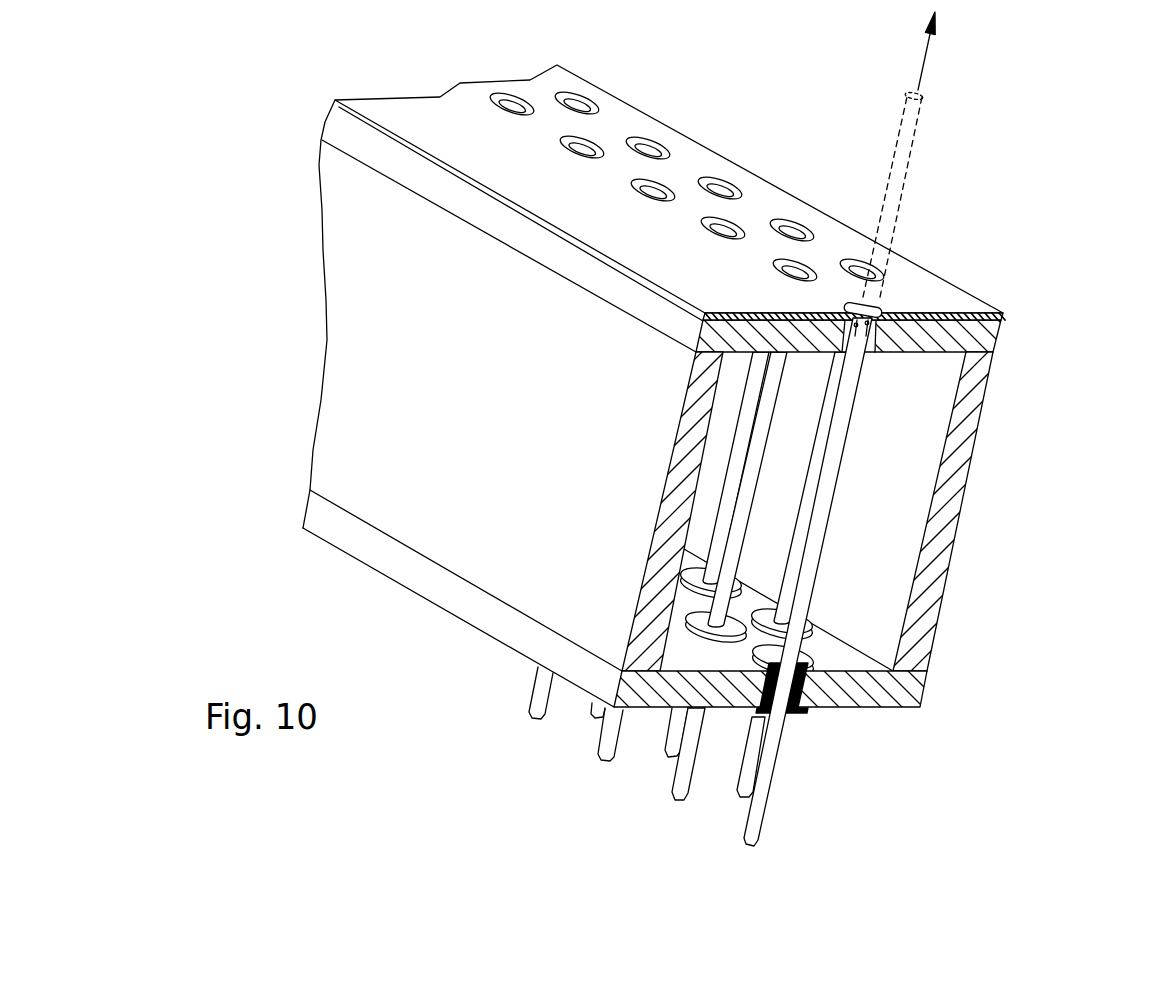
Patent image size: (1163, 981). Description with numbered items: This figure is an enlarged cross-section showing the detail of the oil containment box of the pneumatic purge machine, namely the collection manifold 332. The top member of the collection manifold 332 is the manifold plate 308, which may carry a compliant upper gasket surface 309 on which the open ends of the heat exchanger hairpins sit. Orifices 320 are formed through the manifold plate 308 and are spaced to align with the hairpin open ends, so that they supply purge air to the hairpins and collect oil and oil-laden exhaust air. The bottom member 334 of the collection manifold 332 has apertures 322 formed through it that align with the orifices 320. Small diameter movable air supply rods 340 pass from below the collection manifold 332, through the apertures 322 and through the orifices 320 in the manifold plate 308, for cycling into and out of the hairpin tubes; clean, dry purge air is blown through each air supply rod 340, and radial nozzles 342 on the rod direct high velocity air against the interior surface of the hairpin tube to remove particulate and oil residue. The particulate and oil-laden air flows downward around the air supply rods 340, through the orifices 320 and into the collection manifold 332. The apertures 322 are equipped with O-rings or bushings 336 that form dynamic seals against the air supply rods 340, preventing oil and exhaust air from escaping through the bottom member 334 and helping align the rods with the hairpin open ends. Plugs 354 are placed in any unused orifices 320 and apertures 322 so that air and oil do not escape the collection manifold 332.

The manifold plate 308 is at (1000, 338).
The compliant upper gasket surface 309 is at (1007, 313).
The orifices 320 is at (725, 182).
The apertures 322 is at (800, 690).
The collection manifold 332 is at (965, 490).
The bottom member of collection manifold 334 is at (920, 693).
The bushings 336 is at (790, 717).
The air supply rods 340 is at (763, 813).
The radial nozzles 342 is at (861, 330).
The plugs 354 is at (593, 107).